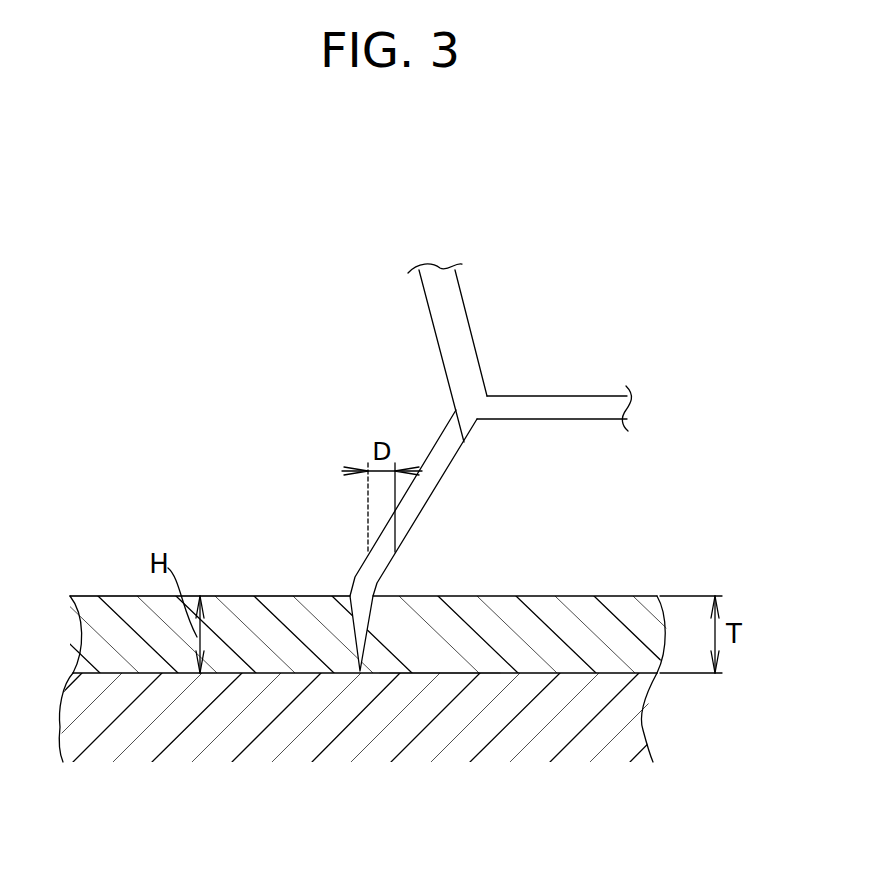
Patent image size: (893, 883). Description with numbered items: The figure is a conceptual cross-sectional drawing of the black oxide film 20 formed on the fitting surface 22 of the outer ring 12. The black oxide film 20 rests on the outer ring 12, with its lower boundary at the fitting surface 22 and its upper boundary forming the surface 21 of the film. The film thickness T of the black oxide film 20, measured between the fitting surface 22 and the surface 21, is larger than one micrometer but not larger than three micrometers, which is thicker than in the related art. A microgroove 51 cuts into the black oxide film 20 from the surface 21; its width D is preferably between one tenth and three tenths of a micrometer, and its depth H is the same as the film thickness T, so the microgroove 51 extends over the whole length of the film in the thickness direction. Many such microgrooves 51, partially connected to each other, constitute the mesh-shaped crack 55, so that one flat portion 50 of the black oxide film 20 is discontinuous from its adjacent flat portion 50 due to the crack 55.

The outer ring 12 is at (493, 720).
The black oxide film 20 is at (506, 620).
The surface of the black oxide film 21 is at (209, 493).
The fitting surface 22 is at (423, 672).
The flat portion 50 is at (548, 441).
The microgroove 51 is at (433, 448).
The crack 55 is at (470, 328).